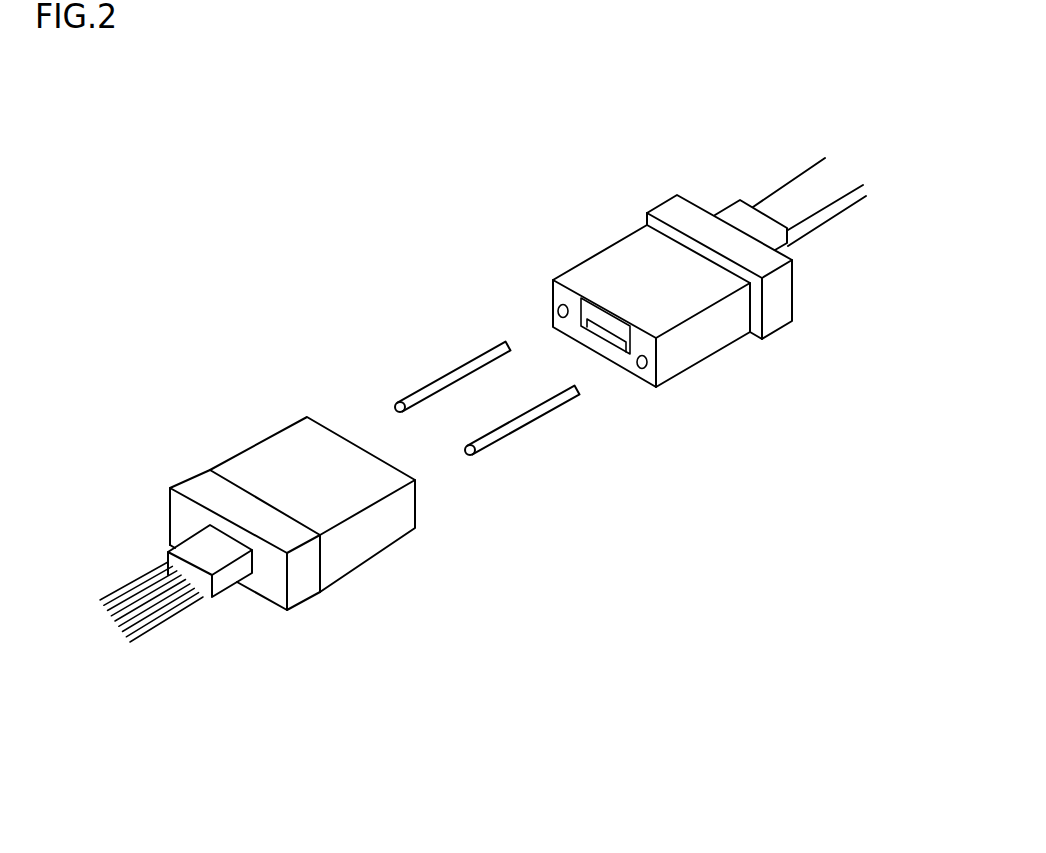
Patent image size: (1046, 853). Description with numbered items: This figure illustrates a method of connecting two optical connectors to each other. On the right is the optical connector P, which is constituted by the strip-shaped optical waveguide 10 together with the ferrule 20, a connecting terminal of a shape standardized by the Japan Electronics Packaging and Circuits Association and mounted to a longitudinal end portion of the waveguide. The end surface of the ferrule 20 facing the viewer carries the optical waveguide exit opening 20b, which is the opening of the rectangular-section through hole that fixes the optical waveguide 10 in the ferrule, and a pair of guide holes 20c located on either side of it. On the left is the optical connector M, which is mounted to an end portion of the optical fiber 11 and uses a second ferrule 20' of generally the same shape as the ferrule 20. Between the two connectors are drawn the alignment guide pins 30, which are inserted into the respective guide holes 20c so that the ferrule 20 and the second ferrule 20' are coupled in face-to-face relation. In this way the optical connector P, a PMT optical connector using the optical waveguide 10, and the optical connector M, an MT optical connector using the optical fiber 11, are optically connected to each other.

The strip-shaped optical waveguide 10 is at (800, 198).
The optical fiber 11 is at (155, 598).
The ferrule 20 is at (628, 340).
The second ferrule 20' is at (291, 513).
The optical waveguide exit opening 20b is at (605, 340).
The guide holes 20c is at (558, 314).
The alignment guide pins 30 is at (448, 370).
The optical connector P is at (665, 295).
The optical connector M is at (310, 535).